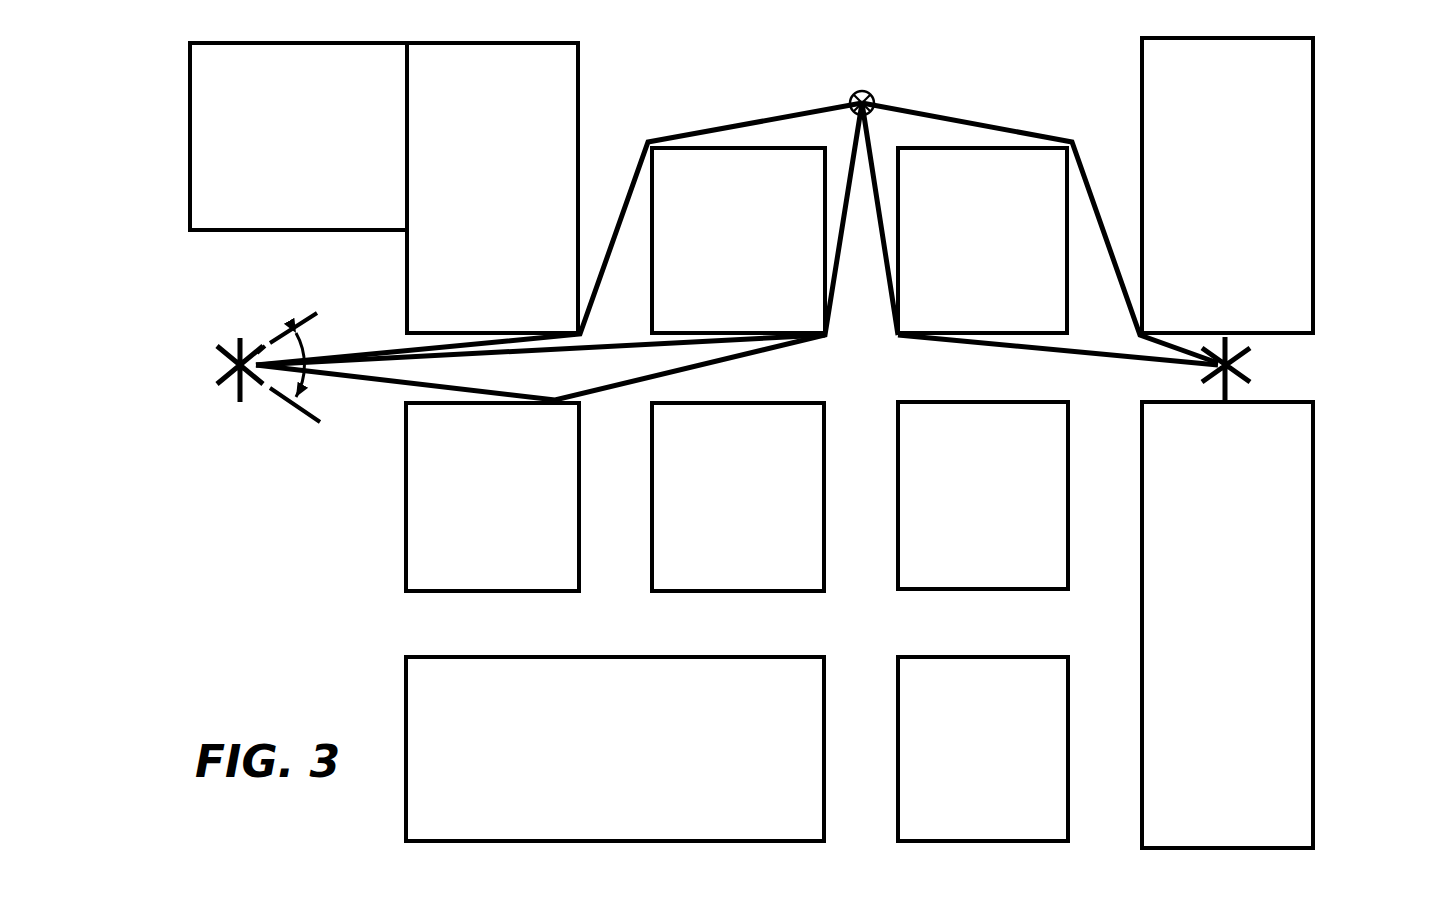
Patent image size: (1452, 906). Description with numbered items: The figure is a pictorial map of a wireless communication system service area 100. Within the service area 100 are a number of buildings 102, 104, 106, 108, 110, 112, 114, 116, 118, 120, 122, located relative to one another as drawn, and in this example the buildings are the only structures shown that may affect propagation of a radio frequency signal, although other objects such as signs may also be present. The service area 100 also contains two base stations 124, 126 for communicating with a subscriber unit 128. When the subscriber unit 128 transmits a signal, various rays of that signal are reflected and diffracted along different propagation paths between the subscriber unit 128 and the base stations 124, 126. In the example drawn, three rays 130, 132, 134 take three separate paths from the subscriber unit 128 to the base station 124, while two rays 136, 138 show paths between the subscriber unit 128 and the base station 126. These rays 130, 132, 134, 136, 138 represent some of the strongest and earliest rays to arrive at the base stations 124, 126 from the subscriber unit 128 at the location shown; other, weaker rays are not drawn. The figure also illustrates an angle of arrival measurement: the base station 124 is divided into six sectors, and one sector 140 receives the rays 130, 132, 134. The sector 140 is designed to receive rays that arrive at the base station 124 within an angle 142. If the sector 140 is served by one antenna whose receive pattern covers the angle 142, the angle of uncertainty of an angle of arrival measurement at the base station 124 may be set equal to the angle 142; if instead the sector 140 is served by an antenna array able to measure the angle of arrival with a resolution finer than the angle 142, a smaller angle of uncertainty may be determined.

The wireless communication system service area 100 is at (1364, 128).
The building 102 is at (298, 136).
The building 104 is at (492, 188).
The building 106 is at (738, 240).
The building 108 is at (982, 240).
The building 110 is at (1227, 185).
The building 112 is at (492, 497).
The building 114 is at (738, 497).
The building 116 is at (983, 495).
The building 118 is at (1227, 625).
The building 120 is at (615, 749).
The building 122 is at (983, 749).
The base station 124 is at (231, 389).
The base station 126 is at (1259, 355).
The subscriber unit 128 is at (873, 91).
The ray 130 is at (636, 165).
The ray 132 is at (600, 347).
The ray 134 is at (630, 385).
The ray 136 is at (982, 127).
The ray 138 is at (1083, 358).
The sector 140 is at (307, 314).
The angle 142 is at (310, 358).